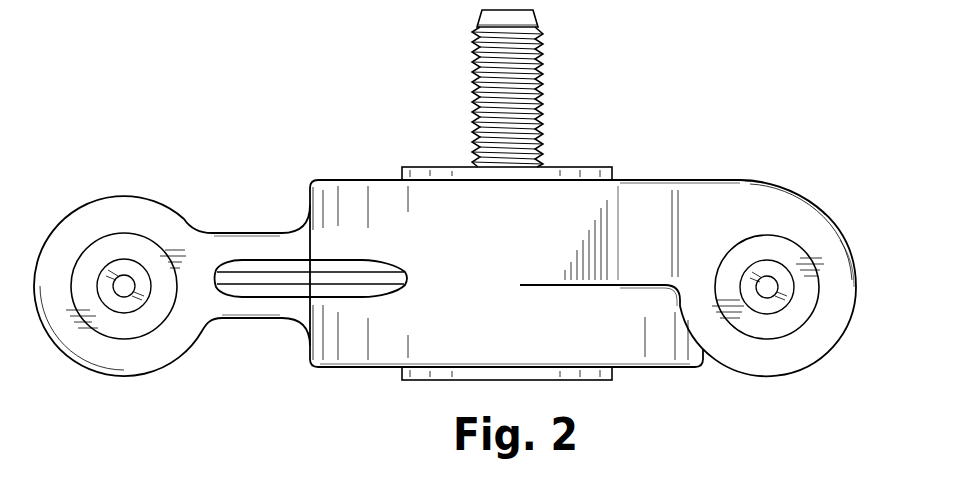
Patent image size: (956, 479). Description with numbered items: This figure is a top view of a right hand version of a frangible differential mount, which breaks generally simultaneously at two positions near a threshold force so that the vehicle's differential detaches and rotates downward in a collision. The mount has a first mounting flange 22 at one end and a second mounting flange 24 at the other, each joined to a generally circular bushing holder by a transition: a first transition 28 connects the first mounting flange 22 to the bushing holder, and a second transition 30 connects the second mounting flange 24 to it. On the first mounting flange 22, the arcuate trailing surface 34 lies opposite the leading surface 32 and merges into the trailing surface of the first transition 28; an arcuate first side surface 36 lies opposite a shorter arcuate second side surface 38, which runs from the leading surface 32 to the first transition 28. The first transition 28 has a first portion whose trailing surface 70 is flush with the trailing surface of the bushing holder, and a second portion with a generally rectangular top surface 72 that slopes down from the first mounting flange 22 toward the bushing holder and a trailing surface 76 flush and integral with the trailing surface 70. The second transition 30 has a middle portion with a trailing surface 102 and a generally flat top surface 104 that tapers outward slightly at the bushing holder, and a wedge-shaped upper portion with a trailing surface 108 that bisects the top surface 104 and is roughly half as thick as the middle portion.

The first mounting flange 22 is at (803, 215).
The second mounting flange 24 is at (125, 196).
The first transition 28 is at (630, 238).
The second transition 30 is at (266, 318).
The leading surface 32 is at (764, 378).
The trailing surface 34 is at (781, 186).
The first side surface 36 is at (853, 264).
The second side surface 38 is at (678, 321).
The trailing surface 70 is at (702, 178).
The top surface 72 is at (552, 191).
The trailing surface 76 is at (622, 178).
The trailing surface 102 is at (252, 232).
The top surface 104 is at (237, 318).
The trailing surface 108 is at (310, 266).